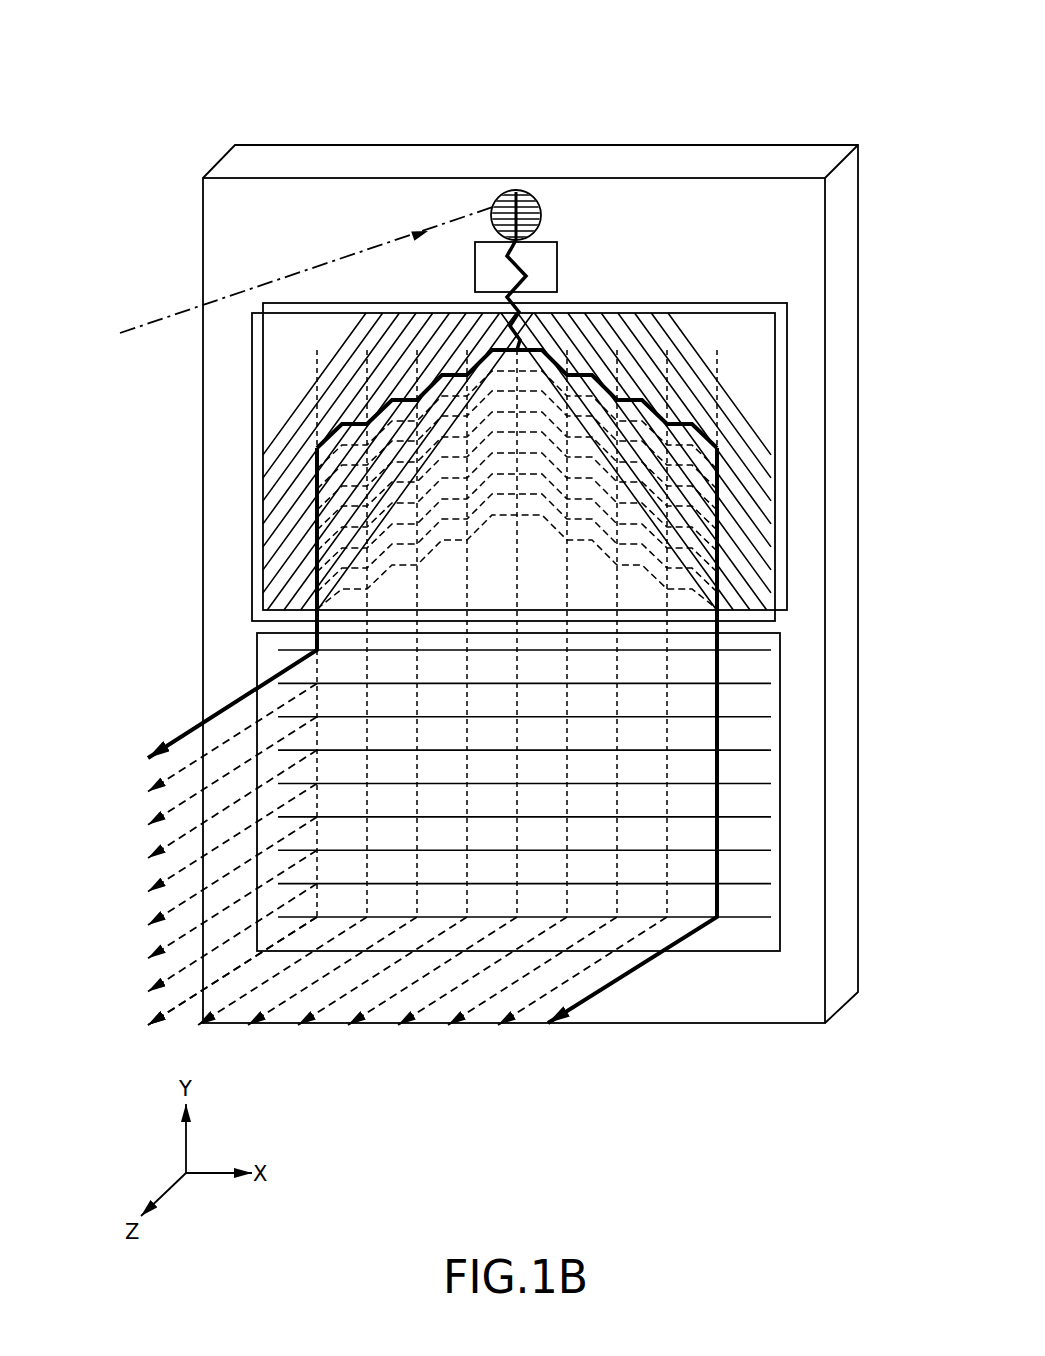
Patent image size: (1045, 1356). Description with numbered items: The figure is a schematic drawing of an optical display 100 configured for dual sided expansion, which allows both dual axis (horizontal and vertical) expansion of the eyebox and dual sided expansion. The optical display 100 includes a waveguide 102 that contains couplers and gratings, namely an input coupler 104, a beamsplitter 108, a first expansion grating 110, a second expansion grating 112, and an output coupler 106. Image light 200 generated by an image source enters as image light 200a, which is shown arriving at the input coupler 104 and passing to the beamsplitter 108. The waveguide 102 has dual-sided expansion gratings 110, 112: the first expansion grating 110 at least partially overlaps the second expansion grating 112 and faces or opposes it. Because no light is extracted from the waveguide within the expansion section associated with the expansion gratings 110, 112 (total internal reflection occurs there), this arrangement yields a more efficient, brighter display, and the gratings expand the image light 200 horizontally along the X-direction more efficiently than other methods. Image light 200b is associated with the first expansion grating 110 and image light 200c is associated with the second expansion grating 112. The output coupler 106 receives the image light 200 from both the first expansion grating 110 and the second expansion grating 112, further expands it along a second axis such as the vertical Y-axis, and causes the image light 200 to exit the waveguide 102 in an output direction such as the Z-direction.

The optical display 100 is at (157, 52).
The waveguide 102 is at (188, 120).
The input coupler 104 is at (538, 208).
The output coupler 106 is at (780, 903).
The beamsplitter 108 is at (558, 270).
The first expansion grating 110 is at (777, 568).
The second expansion grating 112 is at (787, 600).
The image light 200 is at (177, 840).
The image light 200a is at (175, 315).
The image light 200b is at (180, 735).
The image light 200c is at (595, 995).